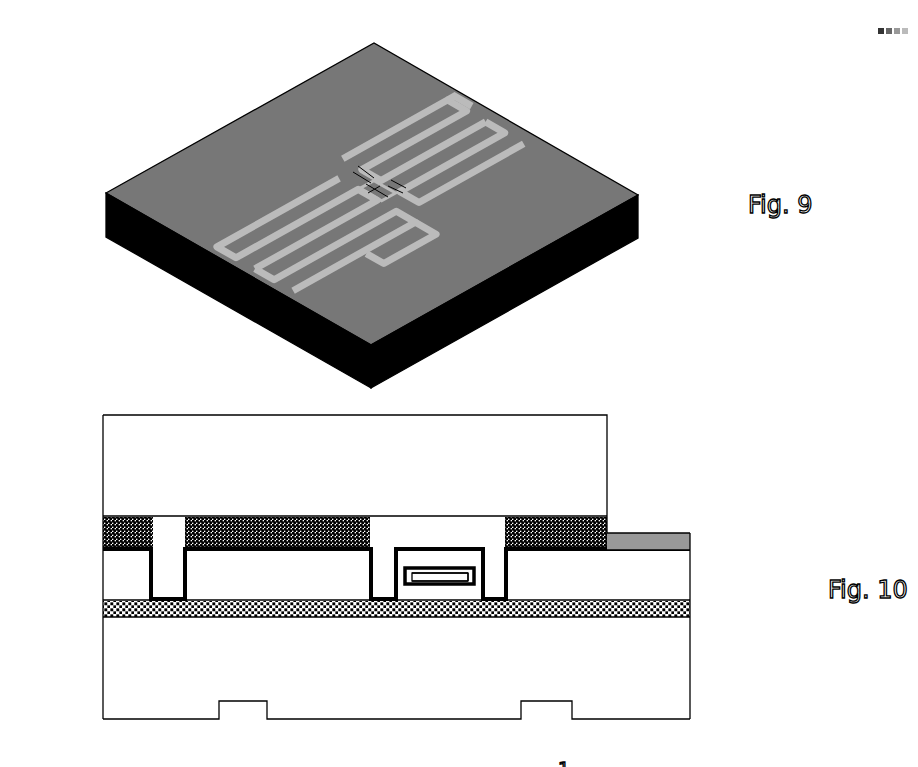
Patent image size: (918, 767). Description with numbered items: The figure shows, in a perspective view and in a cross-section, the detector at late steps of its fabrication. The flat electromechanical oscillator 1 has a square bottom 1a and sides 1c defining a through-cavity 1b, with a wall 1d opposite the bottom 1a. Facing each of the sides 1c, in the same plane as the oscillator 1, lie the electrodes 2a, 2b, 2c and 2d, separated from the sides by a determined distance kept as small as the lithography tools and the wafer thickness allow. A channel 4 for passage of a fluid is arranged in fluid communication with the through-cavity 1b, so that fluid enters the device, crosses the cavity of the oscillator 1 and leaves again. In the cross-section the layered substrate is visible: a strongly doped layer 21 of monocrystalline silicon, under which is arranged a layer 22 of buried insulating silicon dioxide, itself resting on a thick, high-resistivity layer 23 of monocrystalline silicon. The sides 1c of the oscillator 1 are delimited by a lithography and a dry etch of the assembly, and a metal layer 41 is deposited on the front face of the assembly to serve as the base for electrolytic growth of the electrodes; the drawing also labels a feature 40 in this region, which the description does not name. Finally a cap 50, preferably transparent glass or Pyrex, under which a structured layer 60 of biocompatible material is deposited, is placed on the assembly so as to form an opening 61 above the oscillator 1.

In FIG. 9, the electromechanical oscillator 1 is at (372, 178).
In FIG. 10, the bottom 1a is at (432, 583).
In FIG. 10, the through-cavity 1b is at (440, 567).
In FIG. 10, the sides 1c is at (460, 553).
In FIG. 10, the wall 1d is at (477, 565).
In FIG. 9, the electrode 2a is at (468, 108).
In FIG. 9, the electrode 2b is at (527, 120).
In FIG. 9, the electrode 2c is at (266, 233).
In FIG. 9, the electrode 2d is at (267, 210).
In FIG. 9, the channel 4 is at (363, 187).
In FIG. 10, the layer of monocrystalline silicon 21 is at (670, 575).
In FIG. 10, the layer of buried insulating silicon dioxide 22 is at (670, 601).
In FIG. 10, the layer of monocrystalline silicon 23 is at (650, 688).
In FIG. 10, the cavity 40 is at (373, 560).
In FIG. 10, the metal layer 41 is at (643, 535).
In FIG. 10, the cap 50 is at (565, 452).
In FIG. 10, the structured layer 60 is at (598, 517).
In FIG. 10, the opening 61 is at (371, 515).